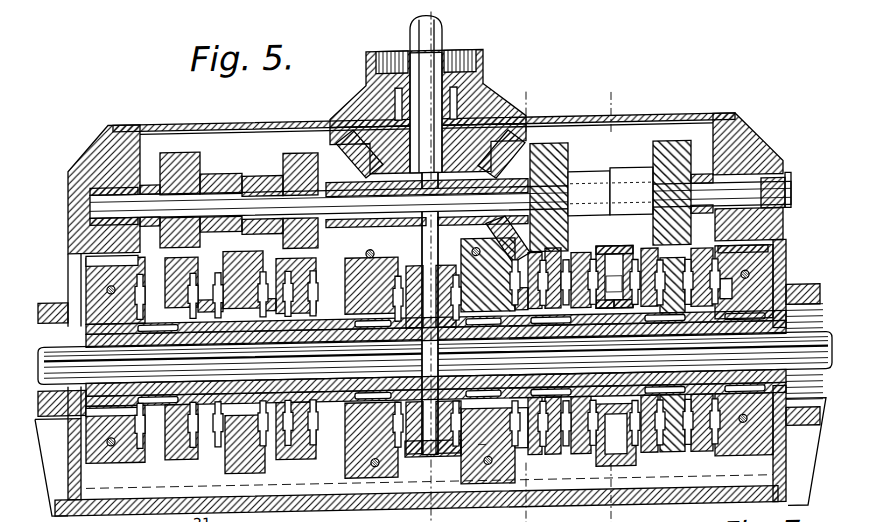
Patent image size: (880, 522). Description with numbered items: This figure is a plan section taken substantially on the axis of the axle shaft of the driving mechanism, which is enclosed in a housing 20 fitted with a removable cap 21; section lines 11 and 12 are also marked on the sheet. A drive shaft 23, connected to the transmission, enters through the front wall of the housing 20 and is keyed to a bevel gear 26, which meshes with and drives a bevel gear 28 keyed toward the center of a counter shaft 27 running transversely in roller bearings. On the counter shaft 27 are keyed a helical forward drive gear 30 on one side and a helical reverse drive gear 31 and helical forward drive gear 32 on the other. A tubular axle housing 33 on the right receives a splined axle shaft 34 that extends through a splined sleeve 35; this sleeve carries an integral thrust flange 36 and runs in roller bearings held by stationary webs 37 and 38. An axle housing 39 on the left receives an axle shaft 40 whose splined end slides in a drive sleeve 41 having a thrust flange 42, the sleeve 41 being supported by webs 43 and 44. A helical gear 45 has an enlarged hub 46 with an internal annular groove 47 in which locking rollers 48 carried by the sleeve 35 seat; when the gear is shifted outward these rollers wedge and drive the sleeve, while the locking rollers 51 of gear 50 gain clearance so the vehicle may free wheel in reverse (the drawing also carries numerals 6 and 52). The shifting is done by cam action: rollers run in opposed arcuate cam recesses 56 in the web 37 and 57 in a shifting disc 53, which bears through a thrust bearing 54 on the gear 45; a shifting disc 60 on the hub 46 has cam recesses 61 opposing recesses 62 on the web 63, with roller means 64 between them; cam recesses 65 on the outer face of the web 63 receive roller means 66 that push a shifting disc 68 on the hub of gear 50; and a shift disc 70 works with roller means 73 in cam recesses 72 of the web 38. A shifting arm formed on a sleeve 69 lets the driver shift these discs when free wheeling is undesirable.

The drive shaft 6 is at (406, 26).
The drive shaft 23 is at (428, 43).
The housing 20 is at (197, 120).
The bevel gear 28 is at (522, 150).
The counter shaft 27 is at (735, 198).
The helical forward drive gear 32 is at (165, 148).
The helical reverse drive gear 31 is at (282, 151).
The bevel gear 26 is at (345, 145).
The shifting disc 53 is at (472, 250).
The removable cap 21 is at (540, 265).
The thrust bearing 54 is at (566, 196).
The stationary member or web 63 is at (640, 187).
The helical forward drive gear 30 is at (672, 146).
The section line 11 is at (517, 94).
The section line 12 is at (602, 96).
The axle shaft 40 is at (433, 358).
The axle shaft 34 is at (809, 352).
The splined sleeve 35 is at (803, 284).
The stationary member or vertical web 38 is at (772, 274).
The splined drive sleeve 41 is at (62, 356).
The axle housing 39 is at (50, 468).
The tubular axle housing 33 is at (810, 451).
The stationary member or vertical web 44 is at (130, 258).
The stationary member or vertical web 43 is at (355, 256).
The thrust flange 42 is at (411, 350).
The thrust flange 36 is at (443, 286).
The stationary member or vertical web 37 is at (446, 264).
The arcuate cam recesses 56 is at (505, 298).
The locking rollers 48 is at (488, 446).
The internal annular groove 47 is at (508, 428).
The clutch disk 52 is at (488, 446).
The locking rollers 51 is at (556, 270).
The helical gear 45 is at (583, 252).
The shifting disc 60 is at (540, 452).
The arcuate cam recesses 62 is at (614, 276).
The cam recesses 65 is at (614, 284).
The roller means 64 is at (600, 250).
The enlarged hub 46 is at (603, 308).
The arcuate cam recesses 61 is at (623, 307).
The sleeve 69 is at (616, 434).
The roller means 66 is at (646, 349).
The shifting disc 68 is at (655, 262).
The gear 50 is at (697, 254).
The shift disc 70 is at (735, 361).
The roller means 73 is at (743, 252).
The arcuate cam recesses 72 is at (728, 288).
The arcuate cam recesses 57 is at (744, 424).